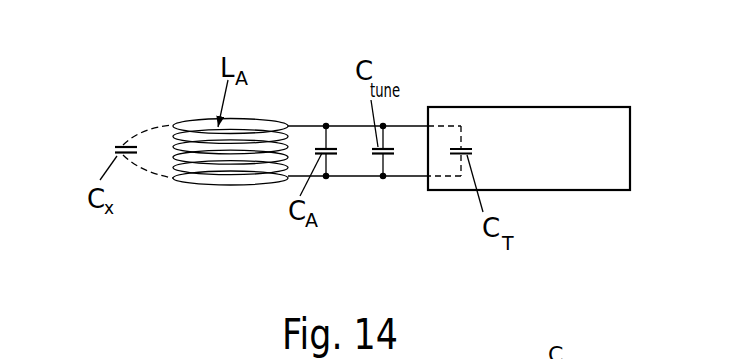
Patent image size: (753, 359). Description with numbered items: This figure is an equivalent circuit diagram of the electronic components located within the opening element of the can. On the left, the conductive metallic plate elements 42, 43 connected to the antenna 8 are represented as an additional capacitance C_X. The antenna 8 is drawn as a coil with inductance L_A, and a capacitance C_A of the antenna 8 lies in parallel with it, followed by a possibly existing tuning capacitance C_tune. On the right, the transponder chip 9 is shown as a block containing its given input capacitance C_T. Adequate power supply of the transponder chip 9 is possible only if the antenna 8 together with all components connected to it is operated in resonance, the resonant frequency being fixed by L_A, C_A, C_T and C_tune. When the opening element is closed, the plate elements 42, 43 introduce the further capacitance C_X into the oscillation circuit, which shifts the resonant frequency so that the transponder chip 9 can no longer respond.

The antenna 8 is at (267, 108).
The transponder chip 9 is at (642, 135).
The capacitive coupling element 42 is at (97, 109).
The metallic plate element 43 is at (118, 140).